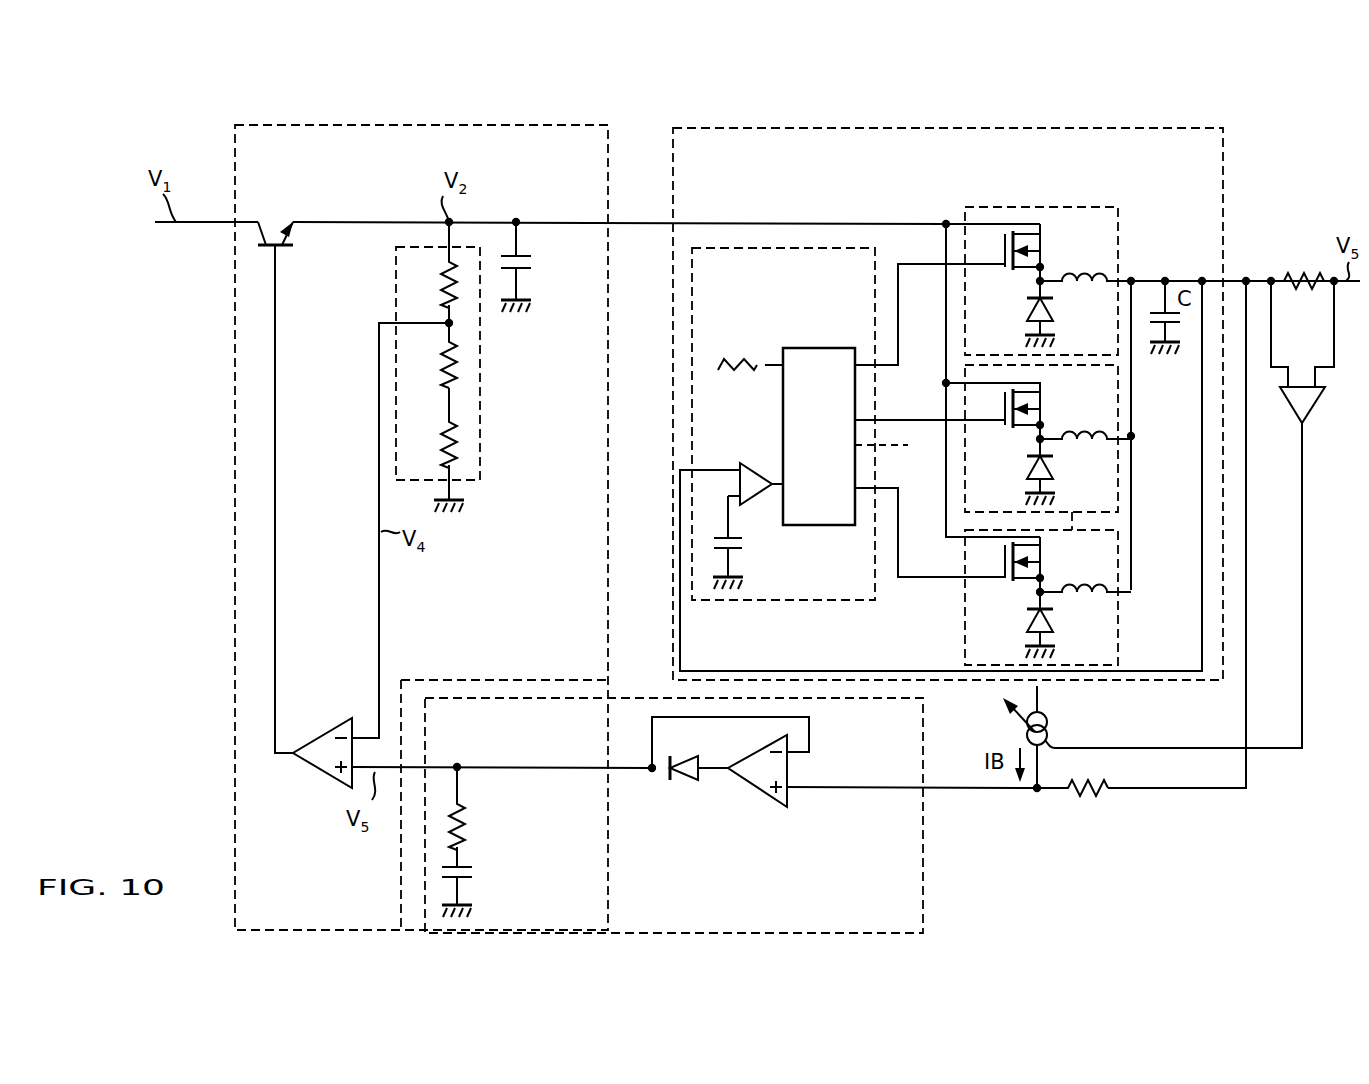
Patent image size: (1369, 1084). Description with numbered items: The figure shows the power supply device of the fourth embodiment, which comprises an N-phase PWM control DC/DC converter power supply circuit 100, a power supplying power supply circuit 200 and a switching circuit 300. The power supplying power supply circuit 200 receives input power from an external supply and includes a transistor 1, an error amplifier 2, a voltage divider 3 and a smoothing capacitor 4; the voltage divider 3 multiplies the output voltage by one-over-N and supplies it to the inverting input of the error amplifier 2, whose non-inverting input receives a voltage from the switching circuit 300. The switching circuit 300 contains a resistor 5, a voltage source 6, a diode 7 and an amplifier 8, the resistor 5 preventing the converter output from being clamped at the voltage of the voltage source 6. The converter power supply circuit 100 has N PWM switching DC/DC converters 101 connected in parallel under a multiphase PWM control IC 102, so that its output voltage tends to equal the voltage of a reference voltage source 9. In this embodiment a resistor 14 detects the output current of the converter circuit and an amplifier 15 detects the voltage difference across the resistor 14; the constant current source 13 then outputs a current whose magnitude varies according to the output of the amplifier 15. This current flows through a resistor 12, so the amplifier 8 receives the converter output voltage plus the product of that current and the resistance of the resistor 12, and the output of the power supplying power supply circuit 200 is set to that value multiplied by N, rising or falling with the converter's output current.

The transistor 1 is at (274, 218).
The error amplifier 2 is at (322, 733).
The voltage divider 3 is at (481, 395).
The smoothing capacitor 4 is at (535, 262).
The resistor 5 is at (470, 828).
The voltage source 6 is at (482, 873).
The diode 7 is at (683, 752).
The amplifier 8 is at (744, 788).
The reference voltage source 9 is at (746, 546).
The resistor 12 is at (1110, 783).
The constant current source 13 is at (1040, 700).
The resistor 14 is at (1300, 270).
The amplifier 15 is at (1312, 405).
The N-phase PWM control DC/DC converter power supply circuit 100 is at (1141, 128).
The PWM switching DC/DC converters 101 is at (1130, 360).
The multiphase PWM control IC 102 is at (848, 453).
The power supplying power supply circuit 200 is at (520, 126).
The switching circuit 300 is at (923, 870).